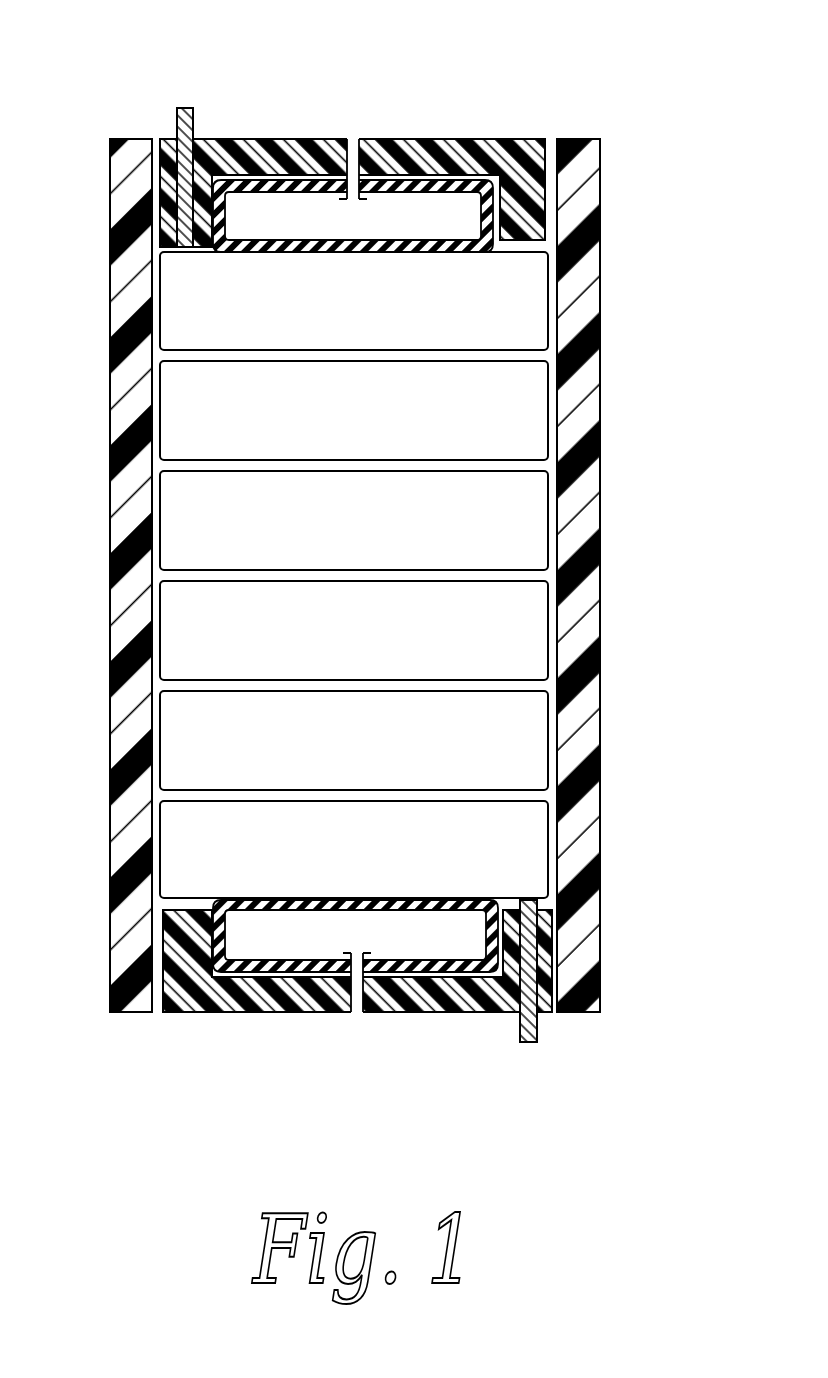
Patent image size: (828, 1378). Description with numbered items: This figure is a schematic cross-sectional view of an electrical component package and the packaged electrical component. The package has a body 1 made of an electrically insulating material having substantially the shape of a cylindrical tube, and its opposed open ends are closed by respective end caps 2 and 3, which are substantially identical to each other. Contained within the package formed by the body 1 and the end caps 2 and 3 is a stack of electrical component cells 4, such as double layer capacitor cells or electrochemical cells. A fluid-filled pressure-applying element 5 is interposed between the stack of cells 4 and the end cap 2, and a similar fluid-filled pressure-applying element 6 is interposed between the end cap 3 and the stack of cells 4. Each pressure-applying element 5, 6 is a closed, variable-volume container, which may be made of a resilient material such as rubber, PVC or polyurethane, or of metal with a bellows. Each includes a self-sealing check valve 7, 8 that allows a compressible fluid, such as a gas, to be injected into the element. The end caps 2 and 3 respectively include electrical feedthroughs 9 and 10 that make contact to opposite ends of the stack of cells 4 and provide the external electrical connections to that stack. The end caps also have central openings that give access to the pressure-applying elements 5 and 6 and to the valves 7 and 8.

The body 1 is at (580, 532).
The end cap 2 is at (487, 148).
The end cap 3 is at (423, 1006).
The stack of electrical component cells 4 is at (517, 753).
The fluid-filled pressure-applying element 5 is at (281, 182).
The fluid-filled pressure-applying element 6 is at (208, 1013).
The check valve 7 is at (353, 143).
The check valve 8 is at (358, 1013).
The electrical feedthrough 9 is at (185, 108).
The electrical feedthrough 10 is at (537, 1025).